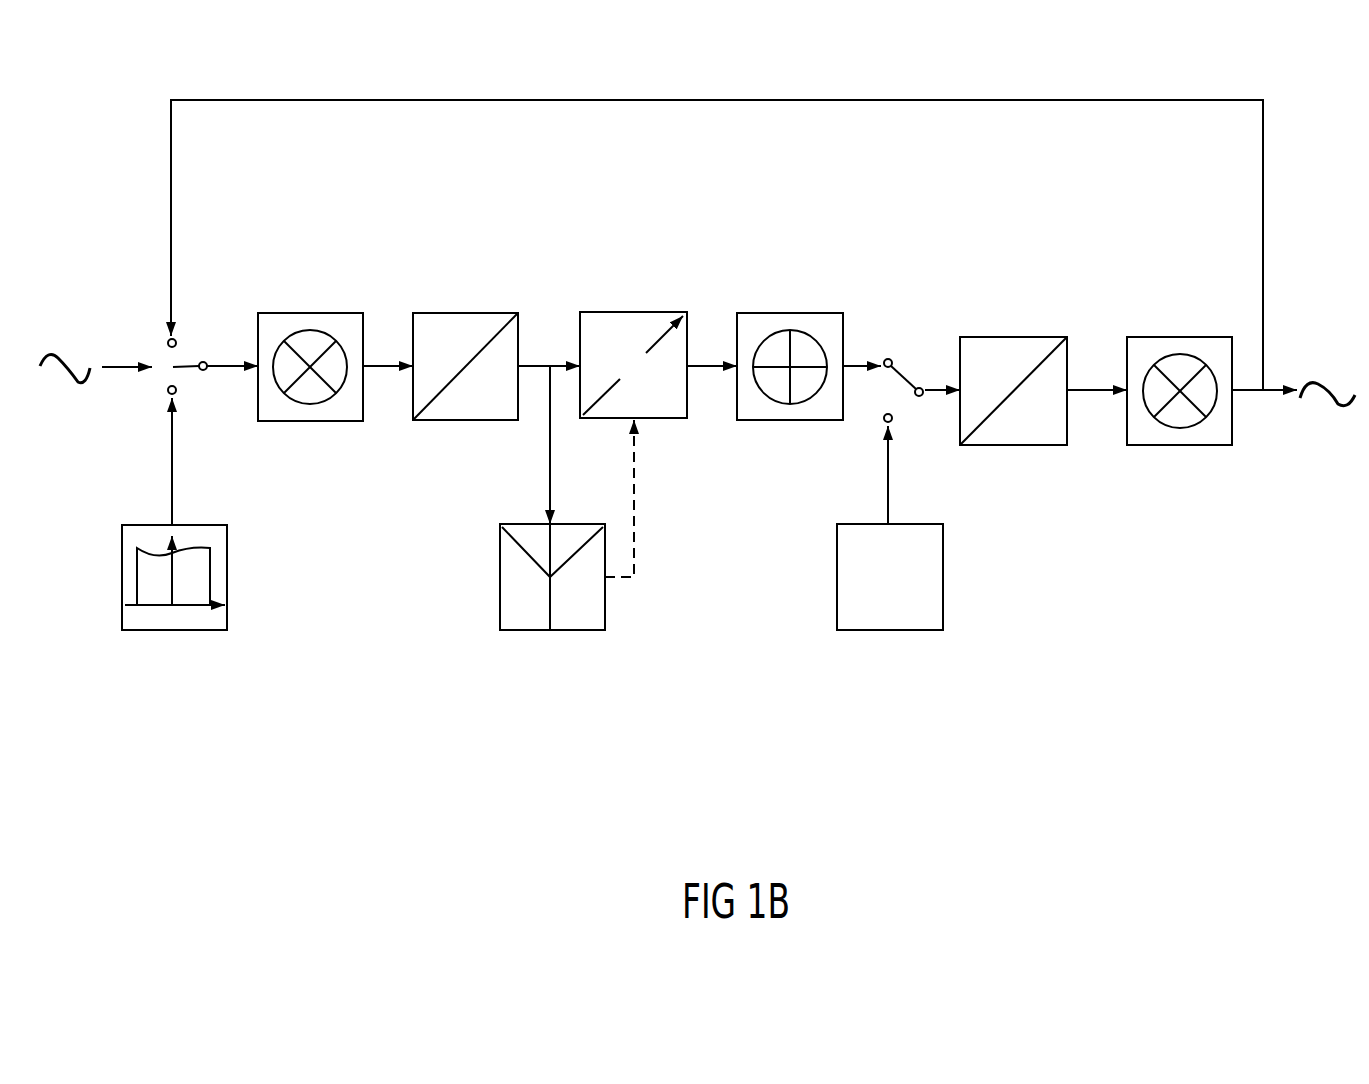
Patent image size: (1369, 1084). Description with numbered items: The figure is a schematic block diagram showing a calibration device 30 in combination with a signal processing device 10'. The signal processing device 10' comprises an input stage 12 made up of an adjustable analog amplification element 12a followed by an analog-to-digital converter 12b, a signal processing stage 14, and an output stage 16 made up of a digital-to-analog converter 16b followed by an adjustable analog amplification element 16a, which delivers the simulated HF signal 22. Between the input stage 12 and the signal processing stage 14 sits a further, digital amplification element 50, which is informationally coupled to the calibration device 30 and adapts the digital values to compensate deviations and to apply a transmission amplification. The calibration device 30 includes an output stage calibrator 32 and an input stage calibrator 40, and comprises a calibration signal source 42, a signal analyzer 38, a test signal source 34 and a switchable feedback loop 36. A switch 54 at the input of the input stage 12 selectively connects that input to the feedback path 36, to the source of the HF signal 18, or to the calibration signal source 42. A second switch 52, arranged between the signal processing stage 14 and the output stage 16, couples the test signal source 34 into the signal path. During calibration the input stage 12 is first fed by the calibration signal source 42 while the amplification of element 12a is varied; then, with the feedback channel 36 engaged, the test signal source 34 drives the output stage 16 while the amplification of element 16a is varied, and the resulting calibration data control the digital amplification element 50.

The signal processing device 10' is at (740, 142).
The input stage 12 is at (282, 230).
The amplification element 12a is at (307, 313).
The analog-to-digital converter 12b is at (462, 313).
The signal processing stage 14 is at (785, 313).
The output stage 16 is at (987, 230).
The amplification element 16a is at (1176, 337).
The digital-to-analog converter 16b is at (1010, 337).
The HF signal 18 is at (60, 357).
The simulated HF signal 22 is at (1336, 372).
The calibration device 30 is at (340, 763).
The output stage calibrator 32 is at (530, 735).
The test signal source 34 is at (888, 632).
The feedback loop 36 is at (1262, 296).
The signal analyzer 38 is at (555, 632).
The input stage calibrator 40 is at (155, 715).
The calibration signal source 42 is at (170, 632).
The digital amplification element 50 is at (630, 313).
The switch 52 is at (910, 366).
The switch 54 is at (163, 360).